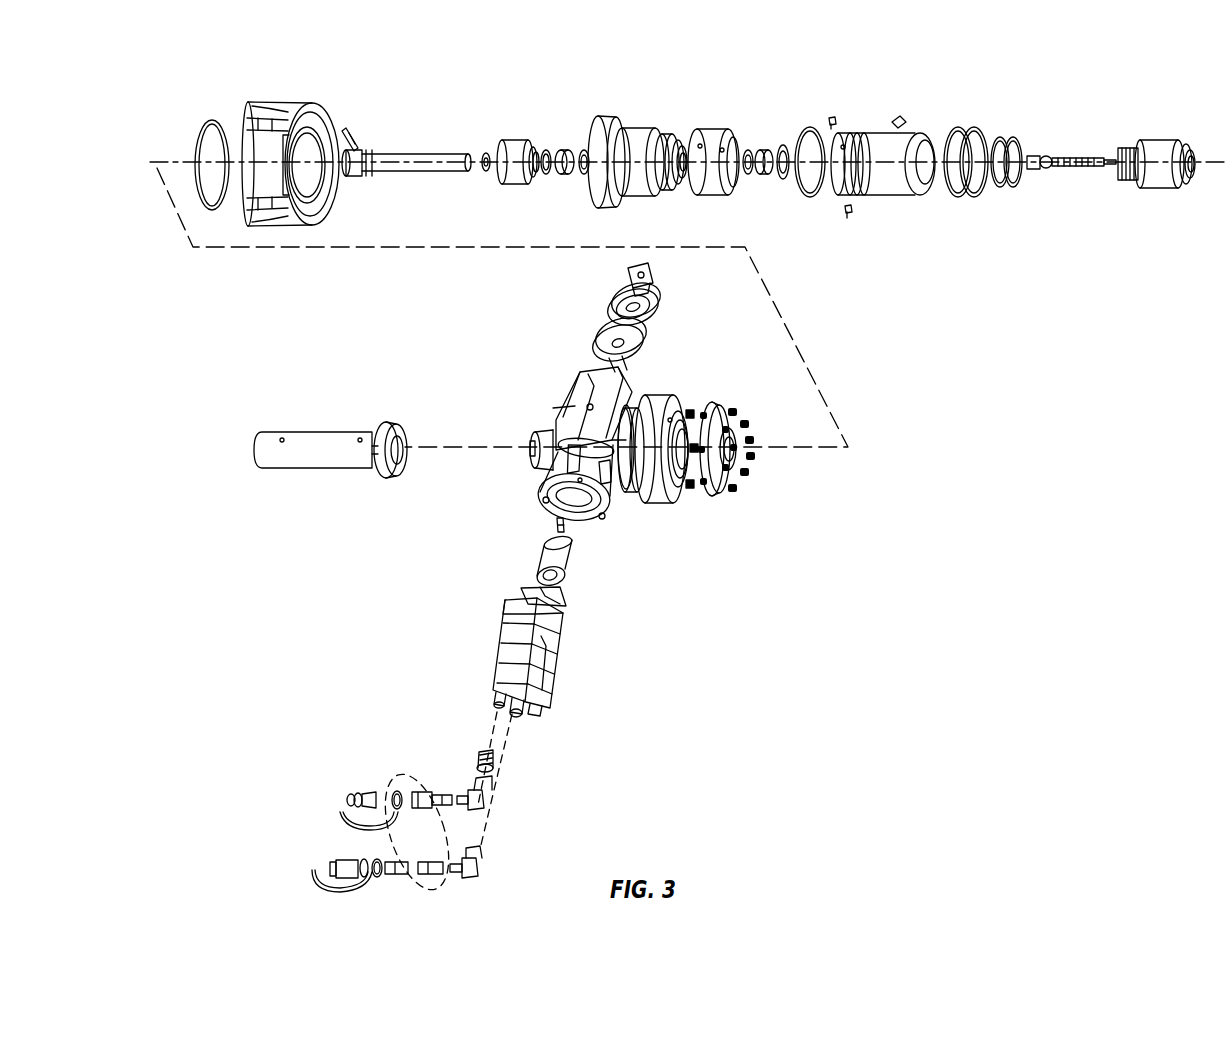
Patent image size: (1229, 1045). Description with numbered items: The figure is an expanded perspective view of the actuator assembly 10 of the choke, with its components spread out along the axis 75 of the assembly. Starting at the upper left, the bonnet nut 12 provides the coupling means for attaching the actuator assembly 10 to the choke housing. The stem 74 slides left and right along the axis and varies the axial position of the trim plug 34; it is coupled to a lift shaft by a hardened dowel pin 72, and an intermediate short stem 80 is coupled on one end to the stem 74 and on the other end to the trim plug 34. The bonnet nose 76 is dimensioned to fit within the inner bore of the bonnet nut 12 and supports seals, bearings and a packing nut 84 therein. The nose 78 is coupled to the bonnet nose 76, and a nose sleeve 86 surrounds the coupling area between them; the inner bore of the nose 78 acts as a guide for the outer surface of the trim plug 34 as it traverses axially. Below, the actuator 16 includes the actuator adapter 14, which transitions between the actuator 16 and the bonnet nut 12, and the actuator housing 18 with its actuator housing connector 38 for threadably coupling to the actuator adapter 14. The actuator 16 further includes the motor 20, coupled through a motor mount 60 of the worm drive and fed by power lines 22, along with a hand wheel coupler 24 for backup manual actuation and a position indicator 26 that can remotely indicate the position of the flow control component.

The actuator assembly 10 is at (798, 262).
The bonnet nut 12 is at (285, 102).
The actuator adapter 14 is at (718, 490).
The actuator 16 is at (615, 548).
The actuator housing 18 is at (590, 394).
The motor 20 is at (558, 660).
The power lines 22 is at (432, 776).
The hand wheel coupler 24 is at (654, 280).
The position indicator 26 is at (268, 432).
The trim plug 34 is at (1160, 140).
The actuator housing connector 38 is at (664, 400).
The motor mount 60 is at (548, 508).
The hardened dowel pin 72 is at (360, 128).
The stem 74 is at (433, 153).
The axis 75 is at (173, 166).
The bonnet nose 76 is at (628, 116).
The nose 78 is at (904, 133).
The intermediate short stem 80 is at (1066, 157).
The packing nut 84 is at (512, 140).
The nose sleeve 86 is at (714, 132).